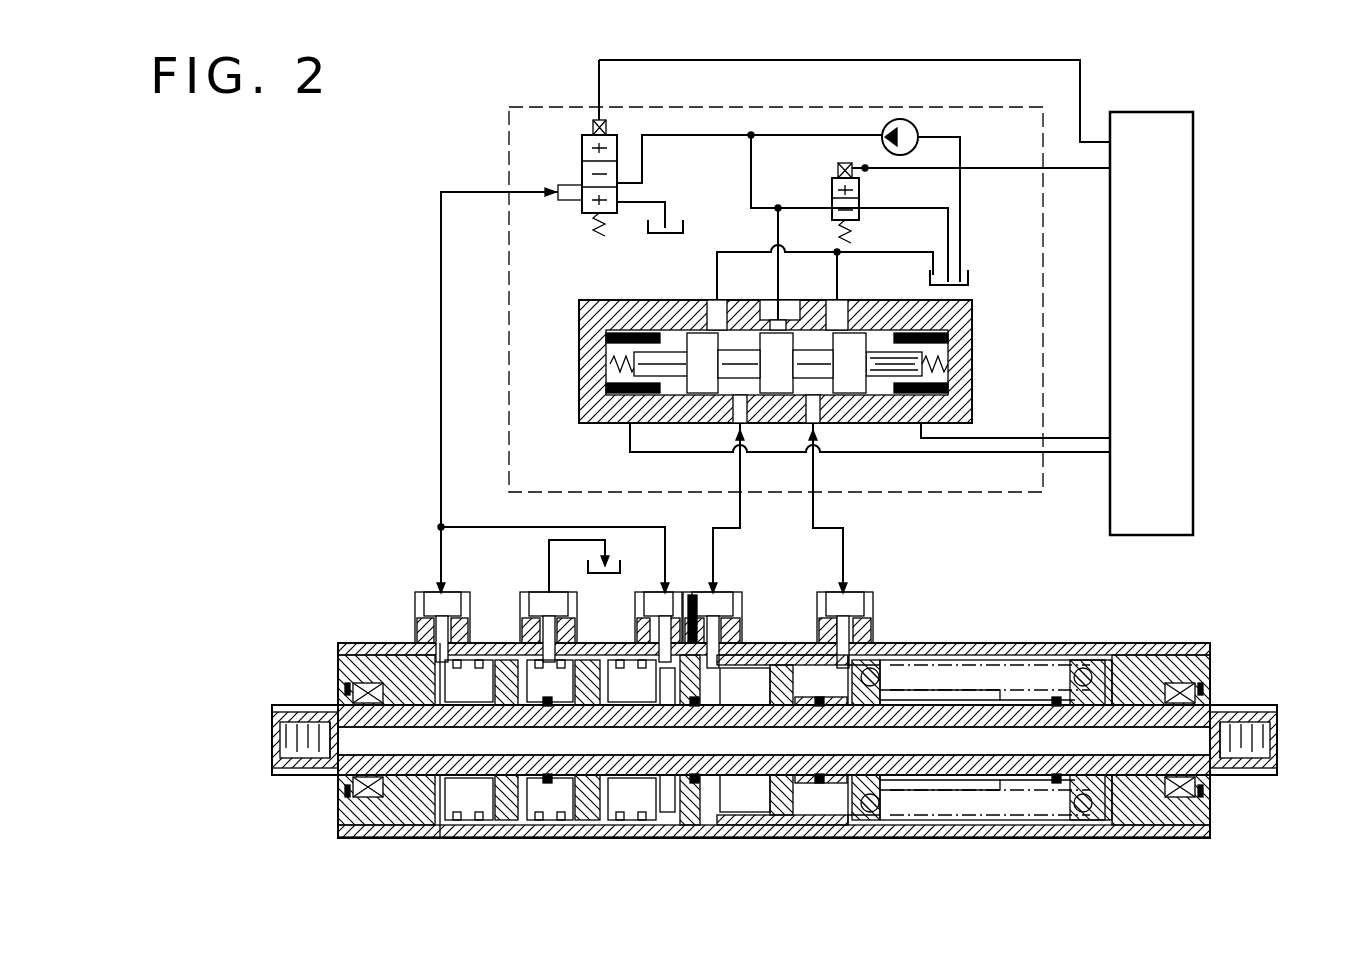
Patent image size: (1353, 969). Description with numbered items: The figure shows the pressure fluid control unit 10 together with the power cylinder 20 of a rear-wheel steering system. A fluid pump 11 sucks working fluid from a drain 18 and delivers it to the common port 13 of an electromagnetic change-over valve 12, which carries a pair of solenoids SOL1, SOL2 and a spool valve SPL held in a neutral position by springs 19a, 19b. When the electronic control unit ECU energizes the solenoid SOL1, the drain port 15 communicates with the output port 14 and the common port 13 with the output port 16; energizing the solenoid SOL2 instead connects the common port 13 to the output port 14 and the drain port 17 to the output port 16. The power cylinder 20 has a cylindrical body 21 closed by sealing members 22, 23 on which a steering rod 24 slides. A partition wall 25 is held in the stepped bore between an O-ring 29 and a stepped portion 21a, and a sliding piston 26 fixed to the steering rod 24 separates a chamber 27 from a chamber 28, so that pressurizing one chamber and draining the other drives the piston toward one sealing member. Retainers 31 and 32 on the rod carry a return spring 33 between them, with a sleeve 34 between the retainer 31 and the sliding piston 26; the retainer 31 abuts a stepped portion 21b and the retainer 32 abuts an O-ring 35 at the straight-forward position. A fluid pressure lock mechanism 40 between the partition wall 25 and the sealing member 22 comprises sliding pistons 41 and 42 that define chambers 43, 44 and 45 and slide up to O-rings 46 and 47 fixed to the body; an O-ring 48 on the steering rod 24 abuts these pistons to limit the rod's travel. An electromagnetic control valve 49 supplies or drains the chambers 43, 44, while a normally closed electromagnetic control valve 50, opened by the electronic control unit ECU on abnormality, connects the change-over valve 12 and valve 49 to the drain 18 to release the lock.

The pressure fluid control unit 10 is at (1004, 107).
The fluid pump 11 is at (902, 119).
The electromagnetic change-over valve 12 is at (655, 300).
The common port 13 is at (777, 310).
The output port 14 is at (740, 412).
The drain port 15 is at (710, 305).
The output port 16 is at (817, 412).
The drain port 17 is at (835, 308).
The drain 18 is at (686, 222).
The spring 19a is at (610, 368).
The spring 19b is at (944, 372).
The power cylinder 20 is at (940, 645).
The cylindrical body 21 is at (1030, 655).
The stepped portion 21a is at (720, 830).
The stepped portion 21b is at (850, 840).
The sealing member 22 is at (338, 815).
The sealing member 23 is at (1155, 830).
The steering rod 24 is at (988, 830).
The partition wall 25 is at (692, 830).
The sliding piston 26 is at (783, 830).
The chamber 27 is at (845, 830).
The chamber 28 is at (757, 830).
The O-ring 29 is at (667, 830).
The retainer 31 is at (872, 668).
The retainer 32 is at (1086, 660).
The return spring 33 is at (1052, 830).
The sleeve 34 is at (824, 830).
The O-ring 35 is at (1090, 830).
The fluid pressure lock mechanism 40 is at (405, 635).
The sliding piston 41 is at (500, 830).
The sliding piston 42 is at (600, 830).
The chamber 43 is at (470, 830).
The chamber 44 is at (625, 830).
The chamber 45 is at (545, 830).
The O-ring 46 is at (520, 830).
The O-ring 47 is at (572, 830).
The O-ring 48 is at (574, 640).
The electromagnetic control valve 49 is at (592, 128).
The electromagnetic control valve 50 is at (830, 186).
The solenoid SOL1 is at (620, 330).
The solenoid SOL2 is at (935, 395).
The spool valve SPL is at (890, 358).
The electronic control unit ECU is at (1143, 537).